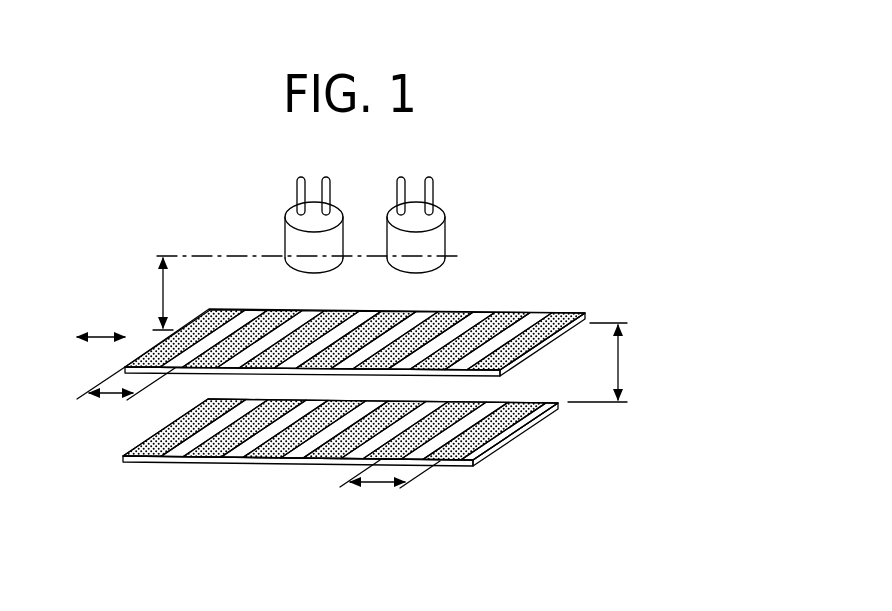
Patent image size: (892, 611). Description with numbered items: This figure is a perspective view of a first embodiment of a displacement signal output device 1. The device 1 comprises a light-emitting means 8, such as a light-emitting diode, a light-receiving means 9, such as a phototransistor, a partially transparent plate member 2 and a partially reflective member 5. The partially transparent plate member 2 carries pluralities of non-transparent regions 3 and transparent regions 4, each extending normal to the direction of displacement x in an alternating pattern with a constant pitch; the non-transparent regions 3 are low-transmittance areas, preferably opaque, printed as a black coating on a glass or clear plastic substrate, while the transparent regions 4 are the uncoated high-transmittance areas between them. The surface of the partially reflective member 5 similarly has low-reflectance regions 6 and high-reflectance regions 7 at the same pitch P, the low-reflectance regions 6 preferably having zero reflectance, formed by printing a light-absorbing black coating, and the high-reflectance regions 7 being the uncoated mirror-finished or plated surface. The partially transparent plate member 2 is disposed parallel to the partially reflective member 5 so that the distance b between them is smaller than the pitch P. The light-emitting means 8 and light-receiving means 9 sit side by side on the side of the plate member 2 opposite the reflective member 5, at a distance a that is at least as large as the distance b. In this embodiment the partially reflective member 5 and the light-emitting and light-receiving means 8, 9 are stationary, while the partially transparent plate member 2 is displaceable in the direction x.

The displacement signal output device 1 is at (569, 265).
The partially transparent plate member 2 is at (570, 313).
The non-transparent regions 3 is at (400, 311).
The transparent regions 4 is at (483, 313).
The partially reflective member 5 is at (470, 466).
The low-reflectance regions 6 is at (365, 458).
The high-reflectance regions 7 is at (220, 455).
The light-emitting means 8 is at (290, 242).
The light-receiving means 9 is at (437, 240).